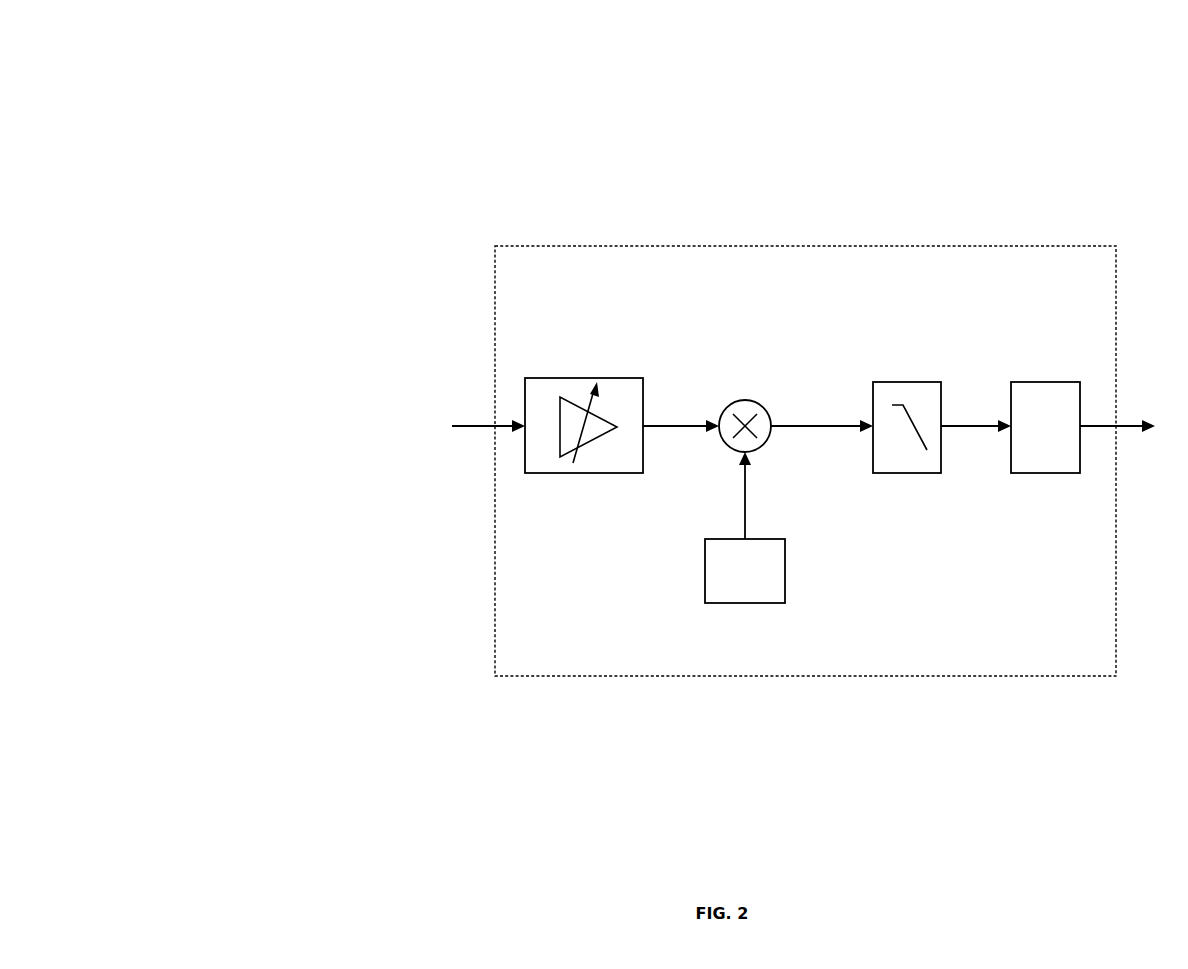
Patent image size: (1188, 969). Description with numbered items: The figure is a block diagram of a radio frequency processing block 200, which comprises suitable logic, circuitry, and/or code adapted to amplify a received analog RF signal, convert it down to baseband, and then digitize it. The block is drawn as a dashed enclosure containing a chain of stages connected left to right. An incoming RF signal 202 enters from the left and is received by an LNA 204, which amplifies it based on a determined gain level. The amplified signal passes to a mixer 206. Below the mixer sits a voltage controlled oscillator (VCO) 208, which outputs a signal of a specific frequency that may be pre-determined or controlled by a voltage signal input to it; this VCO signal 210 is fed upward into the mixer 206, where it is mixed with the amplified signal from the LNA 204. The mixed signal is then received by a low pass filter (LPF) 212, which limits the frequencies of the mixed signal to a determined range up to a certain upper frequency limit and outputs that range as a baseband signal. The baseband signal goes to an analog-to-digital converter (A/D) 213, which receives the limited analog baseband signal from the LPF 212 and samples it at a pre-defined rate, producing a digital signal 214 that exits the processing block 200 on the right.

The RF processing block 200 is at (180, 108).
The RF signal 202 is at (473, 423).
The LNA 204 is at (622, 378).
The mixer 206 is at (748, 400).
The voltage controlled oscillator (VCO) 208 is at (757, 603).
The VCO signal 210 is at (743, 504).
The low pass filter (LPF) 212 is at (906, 382).
The analog-to-digital converter (A/D) 213 is at (1052, 382).
The digital signal 214 is at (1137, 425).